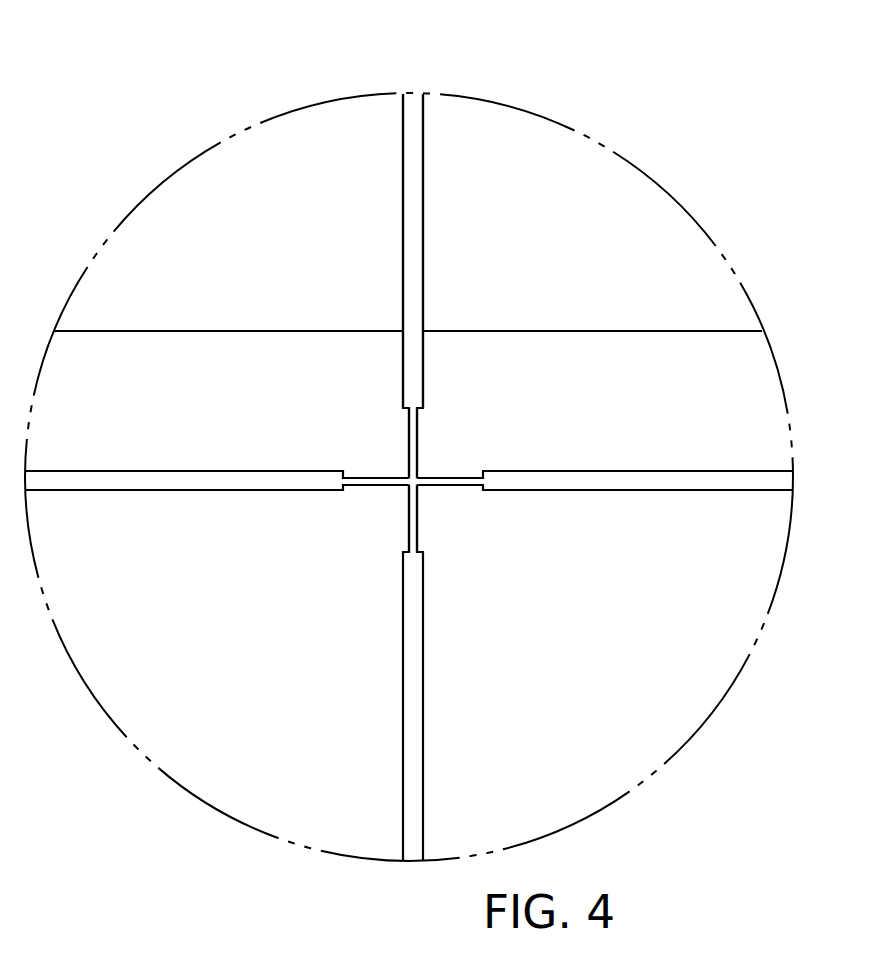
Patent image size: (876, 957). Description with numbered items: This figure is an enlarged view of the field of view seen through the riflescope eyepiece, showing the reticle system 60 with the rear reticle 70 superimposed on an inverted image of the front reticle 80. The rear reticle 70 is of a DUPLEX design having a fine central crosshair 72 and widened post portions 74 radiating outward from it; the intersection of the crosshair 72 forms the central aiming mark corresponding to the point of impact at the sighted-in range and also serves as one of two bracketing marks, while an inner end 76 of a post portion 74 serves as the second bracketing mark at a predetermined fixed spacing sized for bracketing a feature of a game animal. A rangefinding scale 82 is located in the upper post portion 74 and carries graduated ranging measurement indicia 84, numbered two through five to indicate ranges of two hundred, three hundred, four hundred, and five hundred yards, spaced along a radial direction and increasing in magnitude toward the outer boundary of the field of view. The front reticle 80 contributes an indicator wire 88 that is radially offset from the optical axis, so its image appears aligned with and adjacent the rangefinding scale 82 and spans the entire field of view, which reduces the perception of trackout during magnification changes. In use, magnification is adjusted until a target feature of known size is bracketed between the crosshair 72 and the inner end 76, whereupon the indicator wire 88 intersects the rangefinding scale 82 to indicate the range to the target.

The reticle system 60 is at (705, 178).
The rear reticle 70 is at (429, 477).
The central crosshair 72 is at (432, 462).
The post portions 74 is at (423, 381).
The inner end 76 is at (407, 412).
The front reticle 80 is at (422, 446).
The rangefinding scale 82 is at (428, 228).
The ranging measurement indicia 84 is at (405, 288).
The indicator wire 88 is at (607, 331).